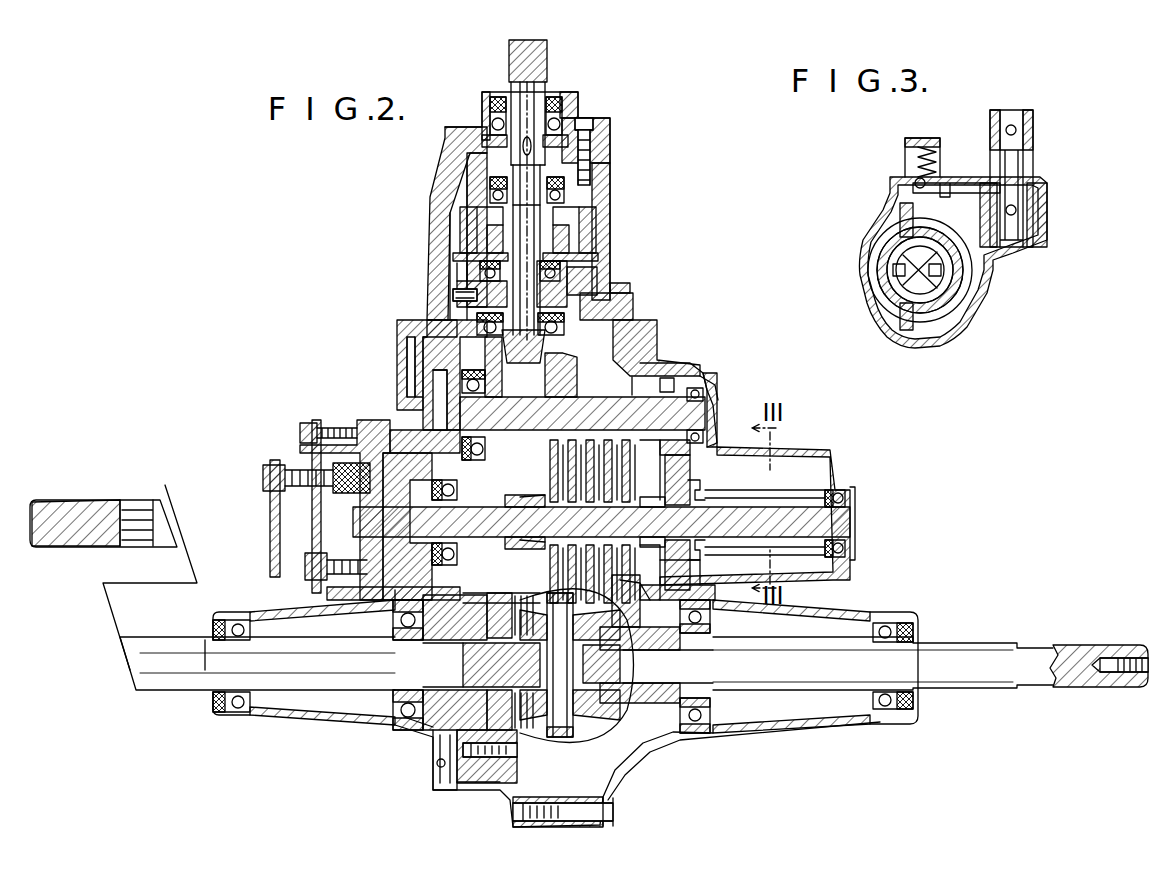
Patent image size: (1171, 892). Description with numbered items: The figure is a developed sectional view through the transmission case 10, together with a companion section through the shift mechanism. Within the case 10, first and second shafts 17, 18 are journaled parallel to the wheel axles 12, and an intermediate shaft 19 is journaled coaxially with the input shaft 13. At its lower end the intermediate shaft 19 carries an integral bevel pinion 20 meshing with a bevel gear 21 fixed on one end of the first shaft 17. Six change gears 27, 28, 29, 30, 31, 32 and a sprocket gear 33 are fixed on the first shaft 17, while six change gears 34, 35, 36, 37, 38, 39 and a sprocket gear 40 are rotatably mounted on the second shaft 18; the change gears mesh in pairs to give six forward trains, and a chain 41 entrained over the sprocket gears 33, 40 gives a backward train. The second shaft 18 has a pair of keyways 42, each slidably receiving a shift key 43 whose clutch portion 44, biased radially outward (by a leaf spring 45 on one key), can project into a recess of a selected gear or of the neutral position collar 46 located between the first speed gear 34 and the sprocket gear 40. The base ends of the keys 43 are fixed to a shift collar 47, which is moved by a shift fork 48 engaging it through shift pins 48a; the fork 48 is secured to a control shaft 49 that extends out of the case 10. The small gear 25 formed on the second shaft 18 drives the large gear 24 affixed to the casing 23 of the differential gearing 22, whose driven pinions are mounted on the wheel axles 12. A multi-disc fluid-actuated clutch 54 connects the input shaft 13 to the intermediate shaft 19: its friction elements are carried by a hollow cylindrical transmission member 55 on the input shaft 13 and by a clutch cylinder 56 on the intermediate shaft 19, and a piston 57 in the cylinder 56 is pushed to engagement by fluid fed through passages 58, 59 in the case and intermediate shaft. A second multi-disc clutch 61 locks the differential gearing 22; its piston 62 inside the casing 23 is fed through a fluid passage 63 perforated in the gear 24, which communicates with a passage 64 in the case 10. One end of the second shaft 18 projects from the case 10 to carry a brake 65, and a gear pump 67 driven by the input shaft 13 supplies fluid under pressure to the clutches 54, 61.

In FIG. 2, the transmission case 10 is at (650, 760).
In FIG. 2, the wheel axles 12 is at (210, 660).
In FIG. 2, the input shaft 13 is at (524, 98).
In FIG. 2, the first shaft 17 is at (712, 400).
In FIG. 2, the second shaft 18 is at (853, 525).
In FIG. 3, the second shaft 18 is at (960, 280).
In FIG. 2, the intermediate shaft 19 is at (585, 265).
In FIG. 2, the bevel pinion 20 is at (578, 283).
In FIG. 2, the bevel gear 21 is at (500, 486).
In FIG. 2, the differential gearing 22 is at (588, 744).
In FIG. 2, the differential casing 23 is at (547, 740).
In FIG. 2, the large gear 24 is at (455, 782).
In FIG. 2, the small gear 25 is at (432, 470).
In FIG. 2, the change gear 27 is at (640, 390).
In FIG. 2, the change gear 28 is at (632, 370).
In FIG. 2, the change gear 29 is at (615, 350).
In FIG. 2, the change gear 30 is at (625, 305).
In FIG. 2, the change gear 31 is at (598, 298).
In FIG. 2, the change gear 32 is at (519, 364).
In FIG. 2, the sprocket gear 33 is at (705, 440).
In FIG. 2, the change gear 34 is at (620, 580).
In FIG. 2, the change gear 35 is at (670, 625).
In FIG. 2, the change gear 36 is at (612, 635).
In FIG. 2, the change gear 37 is at (481, 662).
In FIG. 2, the change gear 38 is at (565, 565).
In FIG. 2, the change gear 39 is at (530, 565).
In FIG. 2, the sprocket gear 40 is at (695, 460).
In FIG. 2, the chain 41 is at (690, 580).
In FIG. 2, the keyways 42 is at (785, 507).
In FIG. 2, the shift key 43 is at (640, 510).
In FIG. 3, the shift key 43 is at (940, 272).
In FIG. 2, the clutch portion 44 is at (540, 492).
In FIG. 2, the leaf spring 45 is at (578, 505).
In FIG. 2, the neutral position collar 46 is at (582, 415).
In FIG. 2, the shift collar 47 is at (702, 487).
In FIG. 3, the shift collar 47 is at (895, 262).
In FIG. 3, the shift fork 48 is at (990, 250).
In FIG. 3, the shift pins 48a is at (902, 212).
In FIG. 3, the control shaft 49 is at (1015, 170).
In FIG. 2, the fluid-actuated clutch 54 is at (597, 205).
In FIG. 2, the hollow cylindrical transmission member 55 is at (478, 178).
In FIG. 2, the clutch cylinder 56 is at (462, 258).
In FIG. 2, the piston 57 is at (605, 222).
In FIG. 2, the fluid passage 58 is at (440, 322).
In FIG. 2, the fluid passage 59 is at (444, 278).
In FIG. 2, the fluid-operated clutch 61 is at (520, 772).
In FIG. 2, the piston 62 is at (440, 580).
In FIG. 2, the fluid passage 63 is at (455, 705).
In FIG. 2, the fluid passage 64 is at (440, 765).
In FIG. 2, the brake 65 is at (354, 412).
In FIG. 2, the pump 67 is at (563, 131).